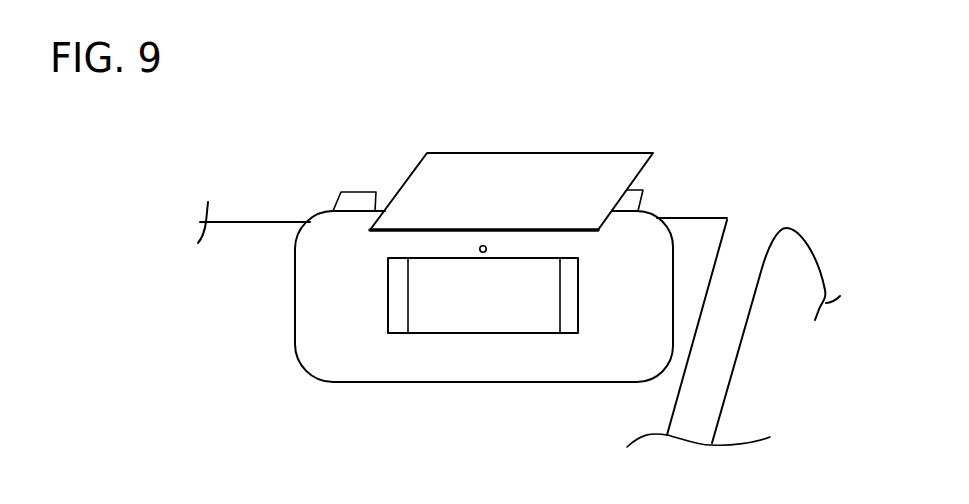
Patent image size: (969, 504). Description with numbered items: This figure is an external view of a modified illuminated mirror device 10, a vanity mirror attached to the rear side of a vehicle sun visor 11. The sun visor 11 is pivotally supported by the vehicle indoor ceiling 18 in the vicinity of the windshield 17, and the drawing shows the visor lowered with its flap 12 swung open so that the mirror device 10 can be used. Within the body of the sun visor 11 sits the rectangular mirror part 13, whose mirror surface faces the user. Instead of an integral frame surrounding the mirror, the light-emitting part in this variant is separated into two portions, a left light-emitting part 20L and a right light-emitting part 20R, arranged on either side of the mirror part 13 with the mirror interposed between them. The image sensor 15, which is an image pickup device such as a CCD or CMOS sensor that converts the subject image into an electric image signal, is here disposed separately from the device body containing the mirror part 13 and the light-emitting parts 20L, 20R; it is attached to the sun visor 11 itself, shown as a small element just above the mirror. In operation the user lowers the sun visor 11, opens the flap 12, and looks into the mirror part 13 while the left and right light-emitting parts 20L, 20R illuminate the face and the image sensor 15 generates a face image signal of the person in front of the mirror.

The illuminated mirror device 10 is at (457, 352).
The sun visor 11 is at (307, 308).
The flap 12 is at (627, 173).
The mirror part 13 is at (528, 320).
The image sensor 15 is at (485, 246).
The windshield 17 is at (705, 235).
The vehicle indoor ceiling 18 is at (270, 212).
The left light-emitting part 20L is at (398, 315).
The right light-emitting part 20R is at (570, 313).